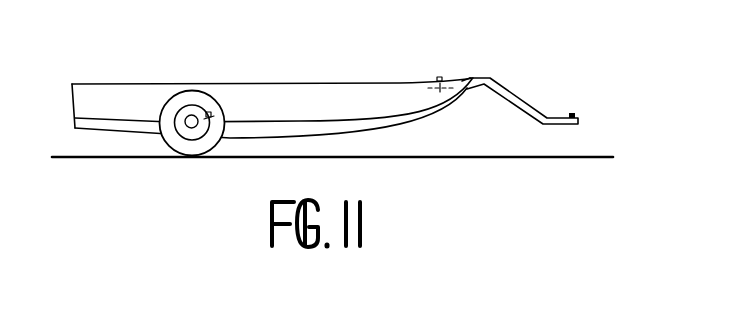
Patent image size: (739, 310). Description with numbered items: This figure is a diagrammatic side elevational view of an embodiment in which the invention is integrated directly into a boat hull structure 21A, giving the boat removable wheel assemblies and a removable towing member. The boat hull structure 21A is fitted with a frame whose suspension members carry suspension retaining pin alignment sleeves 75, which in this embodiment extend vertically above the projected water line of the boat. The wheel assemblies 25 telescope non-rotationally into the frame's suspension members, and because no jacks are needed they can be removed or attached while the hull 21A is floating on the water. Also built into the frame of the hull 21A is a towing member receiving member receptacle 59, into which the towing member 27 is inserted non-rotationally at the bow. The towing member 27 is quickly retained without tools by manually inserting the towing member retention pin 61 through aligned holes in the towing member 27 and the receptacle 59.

The boat hull structure 21A is at (303, 80).
The wheel assembly 25 is at (182, 160).
The suspension retaining pin alignment sleeve 75 is at (212, 108).
The towing member 27 is at (520, 97).
The towing member receiving member receptacle 59 is at (461, 80).
The towing member retention pin 61 is at (435, 77).